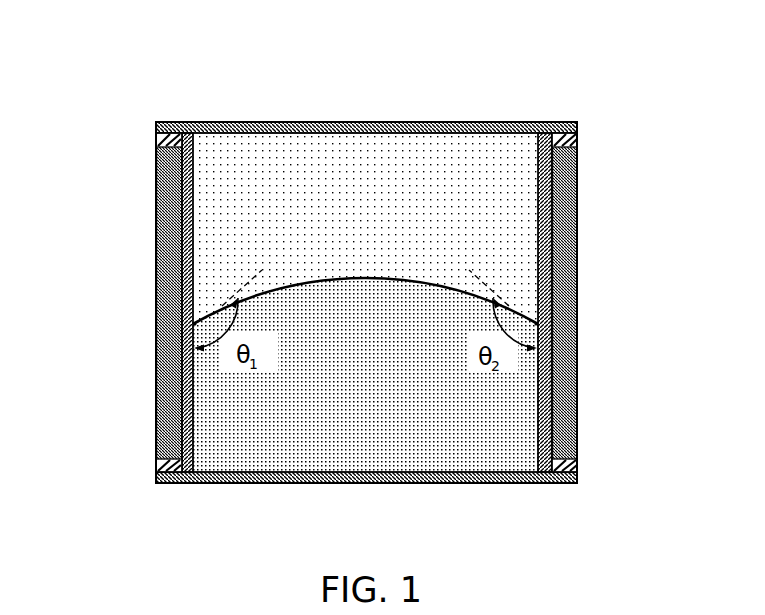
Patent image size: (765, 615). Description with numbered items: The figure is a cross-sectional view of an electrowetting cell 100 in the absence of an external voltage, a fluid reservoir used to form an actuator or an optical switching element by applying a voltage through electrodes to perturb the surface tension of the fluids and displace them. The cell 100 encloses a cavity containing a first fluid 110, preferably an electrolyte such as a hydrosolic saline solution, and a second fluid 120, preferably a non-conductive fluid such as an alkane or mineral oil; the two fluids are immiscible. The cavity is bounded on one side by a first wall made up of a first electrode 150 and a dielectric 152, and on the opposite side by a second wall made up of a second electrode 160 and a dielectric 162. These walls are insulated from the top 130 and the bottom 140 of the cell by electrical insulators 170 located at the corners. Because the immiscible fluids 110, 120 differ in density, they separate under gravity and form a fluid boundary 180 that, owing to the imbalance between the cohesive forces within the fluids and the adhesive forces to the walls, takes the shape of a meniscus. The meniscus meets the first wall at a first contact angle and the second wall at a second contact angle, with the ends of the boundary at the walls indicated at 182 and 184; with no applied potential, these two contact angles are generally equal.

The cell 100 is at (584, 115).
The first fluid 110 is at (380, 411).
The second fluid 120 is at (380, 244).
The top 130 is at (393, 122).
The bottom 140 is at (503, 484).
The first electrode 150 is at (156, 325).
The dielectric 152 is at (200, 244).
The second electrode 160 is at (577, 313).
The dielectric 162 is at (542, 228).
The electrical insulators 170 is at (156, 138).
The fluid boundary 180 is at (341, 268).
The first end of meniscus 182 is at (199, 322).
The second end of meniscus 184 is at (535, 322).